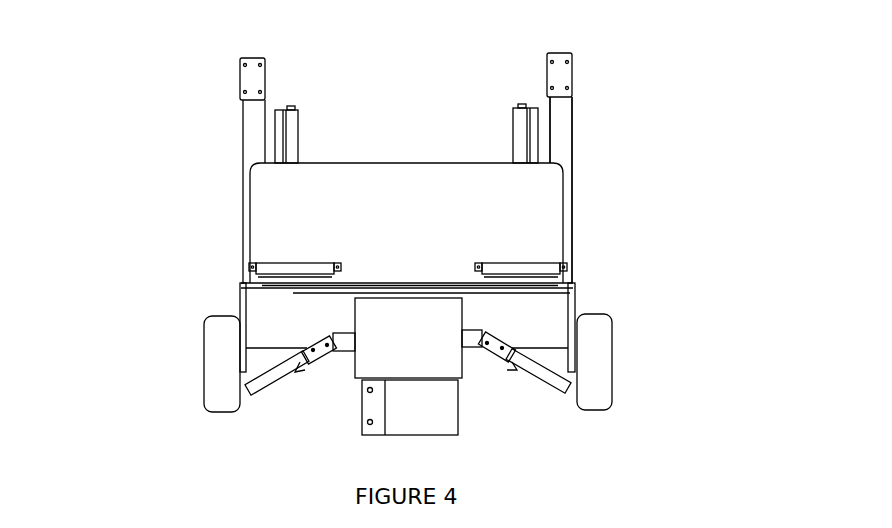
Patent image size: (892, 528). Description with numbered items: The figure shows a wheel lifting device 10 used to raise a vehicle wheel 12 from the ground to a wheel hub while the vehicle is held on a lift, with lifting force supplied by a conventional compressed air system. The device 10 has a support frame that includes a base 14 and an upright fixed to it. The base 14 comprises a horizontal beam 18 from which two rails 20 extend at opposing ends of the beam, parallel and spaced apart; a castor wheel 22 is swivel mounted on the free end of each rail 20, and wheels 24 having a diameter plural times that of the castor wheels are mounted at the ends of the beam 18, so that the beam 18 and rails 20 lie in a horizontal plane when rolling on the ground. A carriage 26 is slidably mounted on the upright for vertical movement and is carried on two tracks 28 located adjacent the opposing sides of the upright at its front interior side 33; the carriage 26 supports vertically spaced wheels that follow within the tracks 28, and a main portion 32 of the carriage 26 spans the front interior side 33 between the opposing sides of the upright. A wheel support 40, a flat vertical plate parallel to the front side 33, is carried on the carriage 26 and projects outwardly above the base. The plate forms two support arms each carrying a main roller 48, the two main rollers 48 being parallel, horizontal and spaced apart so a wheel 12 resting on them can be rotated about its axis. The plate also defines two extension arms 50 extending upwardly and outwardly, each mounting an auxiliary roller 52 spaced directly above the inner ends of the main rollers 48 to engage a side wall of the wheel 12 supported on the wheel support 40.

The wheel lifting device 10 is at (162, 66).
The wheel 12 is at (540, 212).
The base 14 is at (582, 134).
The horizontal beam 18 is at (257, 316).
The rails 20 is at (252, 138).
The castor wheel 22 is at (248, 80).
The wheels 24 is at (217, 355).
The carriage 26 is at (459, 294).
The tracks 28 is at (441, 292).
The main portion 32 is at (365, 296).
The front interior side 33 is at (407, 294).
The wheel support 40 is at (292, 84).
The main roller 48 is at (290, 137).
The extension arms 50 is at (568, 276).
The auxiliary roller 52 is at (293, 260).